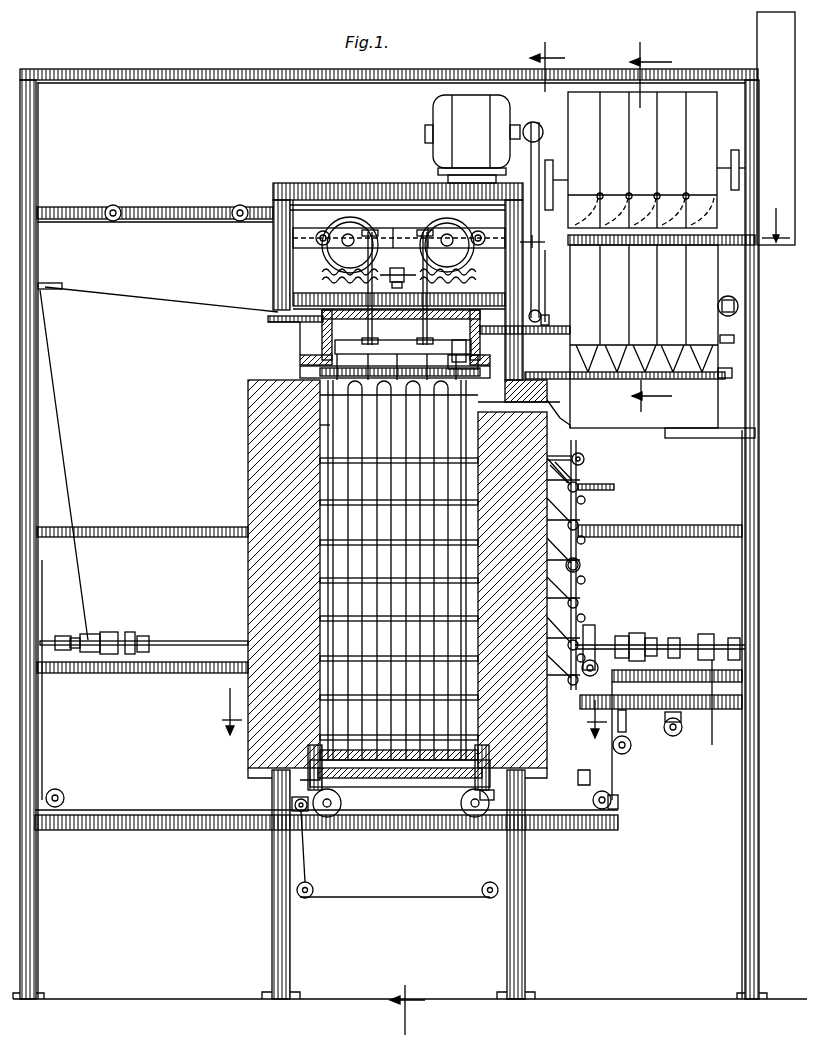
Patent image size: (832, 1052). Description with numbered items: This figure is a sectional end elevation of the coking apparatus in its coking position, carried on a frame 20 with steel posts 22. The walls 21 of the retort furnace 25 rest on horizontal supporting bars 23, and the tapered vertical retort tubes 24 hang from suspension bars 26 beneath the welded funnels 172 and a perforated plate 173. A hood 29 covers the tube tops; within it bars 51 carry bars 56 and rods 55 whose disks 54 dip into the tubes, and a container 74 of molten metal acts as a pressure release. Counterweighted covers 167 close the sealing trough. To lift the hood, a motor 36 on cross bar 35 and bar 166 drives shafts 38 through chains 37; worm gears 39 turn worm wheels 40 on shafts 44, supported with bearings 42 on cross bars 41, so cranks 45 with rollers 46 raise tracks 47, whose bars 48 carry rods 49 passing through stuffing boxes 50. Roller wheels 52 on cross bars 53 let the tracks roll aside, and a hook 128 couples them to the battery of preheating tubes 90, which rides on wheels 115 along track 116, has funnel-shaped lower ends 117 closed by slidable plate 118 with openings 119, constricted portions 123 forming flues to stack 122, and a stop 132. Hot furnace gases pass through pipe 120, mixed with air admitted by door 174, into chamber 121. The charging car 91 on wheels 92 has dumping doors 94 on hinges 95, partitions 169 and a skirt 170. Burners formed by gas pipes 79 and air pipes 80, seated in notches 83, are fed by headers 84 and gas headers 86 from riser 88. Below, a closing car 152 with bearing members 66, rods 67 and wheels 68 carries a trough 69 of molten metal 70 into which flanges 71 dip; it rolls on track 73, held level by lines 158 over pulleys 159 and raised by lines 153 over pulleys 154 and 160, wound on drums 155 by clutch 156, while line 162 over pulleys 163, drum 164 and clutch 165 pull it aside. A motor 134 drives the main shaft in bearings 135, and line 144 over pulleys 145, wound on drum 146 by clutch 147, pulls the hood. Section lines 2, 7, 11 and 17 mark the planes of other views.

The frame 20 is at (160, 69).
The cross bars 53 is at (82, 222).
The roller wheels 52 is at (236, 206).
The steel posts 22 is at (272, 882).
The track 73 is at (178, 830).
The cross bar 35 is at (345, 183).
The cranks 45 is at (345, 212).
The shafts 38 is at (545, 300).
The motor 36 is at (472, 131).
The bar 166 is at (472, 175).
The chains 37 is at (536, 158).
The constricted portions 123 is at (557, 287).
The shafts 44 is at (352, 230).
The tracks 47 is at (397, 224).
The worm wheels 40 is at (426, 224).
The rollers 46 is at (480, 230).
The bars 48 is at (384, 239).
The worm gears 39 is at (338, 250).
The hook 128 is at (460, 250).
The bearings 42 is at (398, 268).
The rods 49 is at (358, 287).
The transverse members or bars 51 is at (438, 287).
The stuffing boxes 50 is at (430, 304).
The cross bars 41 is at (272, 295).
The pulleys 145 is at (58, 290).
The line 144 is at (64, 447).
The hood 29 is at (322, 352).
The rods 55 is at (300, 356).
The bars 56 is at (403, 336).
The funnels 172 is at (396, 363).
The container 74 is at (453, 354).
The counterweighted covers 167 is at (300, 372).
The walls 21 is at (258, 472).
The notches 83 is at (320, 583).
The pipe 120 is at (519, 397).
The suspension bars 26 is at (330, 400).
The perforated plate 173 is at (350, 405).
The disks 54 is at (320, 409).
The retort furnace 25 is at (320, 427).
The retort tubes 24 is at (399, 576).
The car 152 is at (410, 787).
The trough 69 is at (340, 790).
The flanges 71 is at (462, 788).
The molten metal 70 is at (300, 795).
The horizontal supporting bars 23 is at (252, 778).
The bearing members 66 is at (525, 795).
The rods 67 is at (468, 812).
The wheels 68 is at (482, 815).
The pulleys 159 is at (294, 810).
The lines 158 is at (400, 899).
The bearings 135 is at (145, 637).
The drum 164 is at (60, 636).
The drum 146 is at (98, 632).
The clutch 147 is at (128, 632).
The clutch 165 is at (75, 650).
The line 162 is at (44, 748).
The pulleys 163 is at (62, 790).
The charging car 91 is at (712, 102).
The partitions 169 is at (595, 105).
The skirt 170 is at (576, 205).
The dumping doors 94 is at (612, 205).
The hinges 95 is at (642, 205).
The wheels 115 is at (740, 160).
The stack 122 is at (763, 30).
The section line 17 is at (655, 221).
The preheating tubes 90 is at (700, 258).
The wheels 92 is at (735, 307).
The track 116 is at (734, 340).
The stop 132 is at (732, 375).
The slidable plate 118 is at (553, 372).
The openings 119 is at (600, 378).
The funnel-shaped lower ends 117 is at (685, 378).
The regulating door 174 is at (560, 418).
The chamber 121 is at (643, 430).
The section line 11 is at (651, 223).
The section line 2 is at (477, 540).
The section line 7 is at (411, 713).
The riser 88 is at (578, 512).
The gas pipes 79 is at (552, 455).
The gas headers 86 is at (584, 457).
The air pipes 80 is at (566, 472).
The headers 84 is at (582, 566).
The motor 134 is at (598, 645).
The clutch 156 is at (640, 634).
The drums 155 is at (720, 640).
The lines 153 is at (712, 735).
The pulleys 154 is at (633, 746).
The pulleys 160 is at (598, 810).